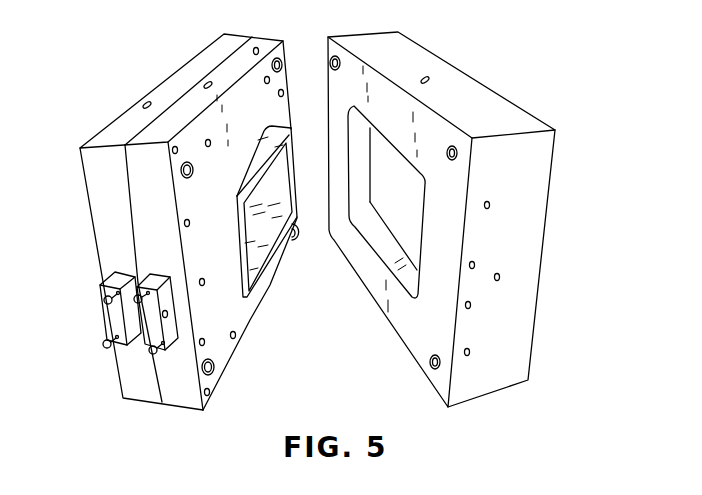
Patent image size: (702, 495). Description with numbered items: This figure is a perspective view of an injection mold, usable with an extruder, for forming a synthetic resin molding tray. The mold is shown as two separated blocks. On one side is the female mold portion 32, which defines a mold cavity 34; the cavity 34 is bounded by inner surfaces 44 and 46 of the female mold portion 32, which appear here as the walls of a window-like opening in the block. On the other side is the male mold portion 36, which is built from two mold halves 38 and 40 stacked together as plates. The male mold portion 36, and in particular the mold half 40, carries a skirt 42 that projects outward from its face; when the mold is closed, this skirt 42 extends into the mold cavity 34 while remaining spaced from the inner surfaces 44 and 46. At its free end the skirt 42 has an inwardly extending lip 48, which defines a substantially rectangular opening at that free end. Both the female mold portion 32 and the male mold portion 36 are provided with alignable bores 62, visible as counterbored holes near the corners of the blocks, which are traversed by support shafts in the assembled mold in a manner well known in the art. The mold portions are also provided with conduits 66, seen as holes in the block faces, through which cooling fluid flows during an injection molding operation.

The female mold portion 32 is at (551, 177).
The mold cavity 34 is at (393, 282).
The male mold portion 36 is at (154, 415).
The mold half 38 is at (133, 393).
The mold half 40 is at (186, 395).
The skirt 42 is at (238, 296).
The inner surface 44 is at (387, 205).
The inner surface 46 is at (388, 252).
The lip 48 is at (295, 147).
The bores 62 is at (330, 62).
The conduits 66 is at (470, 302).